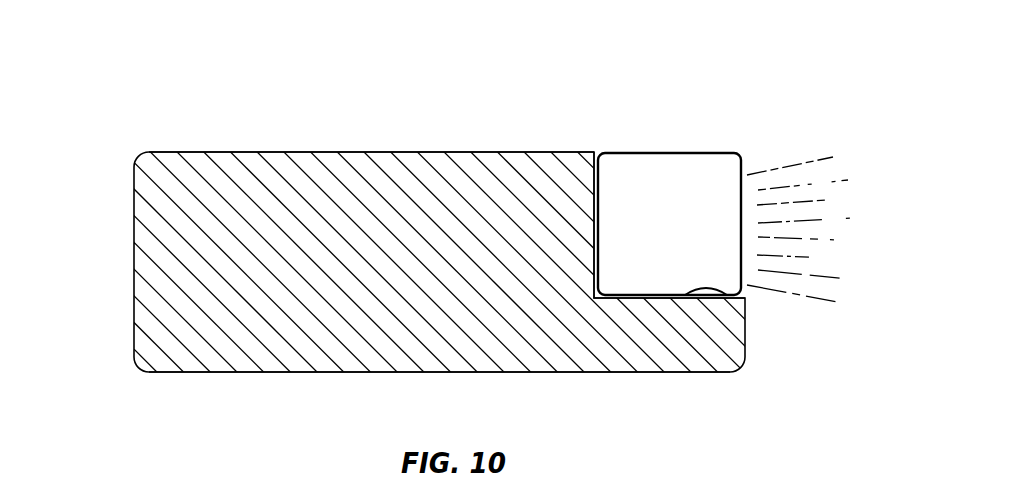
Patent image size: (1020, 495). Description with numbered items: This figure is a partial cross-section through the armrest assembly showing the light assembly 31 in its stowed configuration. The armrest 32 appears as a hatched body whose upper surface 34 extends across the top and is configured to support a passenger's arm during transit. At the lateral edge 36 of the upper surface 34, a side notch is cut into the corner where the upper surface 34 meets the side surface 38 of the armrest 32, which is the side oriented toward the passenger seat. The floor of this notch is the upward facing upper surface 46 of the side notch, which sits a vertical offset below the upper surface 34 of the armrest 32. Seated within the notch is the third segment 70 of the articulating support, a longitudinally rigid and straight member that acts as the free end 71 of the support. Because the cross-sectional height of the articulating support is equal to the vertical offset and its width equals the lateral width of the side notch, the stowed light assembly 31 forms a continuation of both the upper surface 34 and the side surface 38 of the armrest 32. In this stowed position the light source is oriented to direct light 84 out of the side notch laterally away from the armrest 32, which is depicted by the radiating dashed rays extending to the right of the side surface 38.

The light assembly 31 is at (677, 116).
The armrest 32 is at (173, 221).
The upper surface 34 is at (288, 151).
The lateral edge 36 is at (595, 153).
The side surface 38 is at (747, 332).
The upper surface of the side notch 46 is at (747, 298).
The third segment 70 is at (709, 198).
The free end 71 is at (683, 185).
The light 84 is at (812, 160).